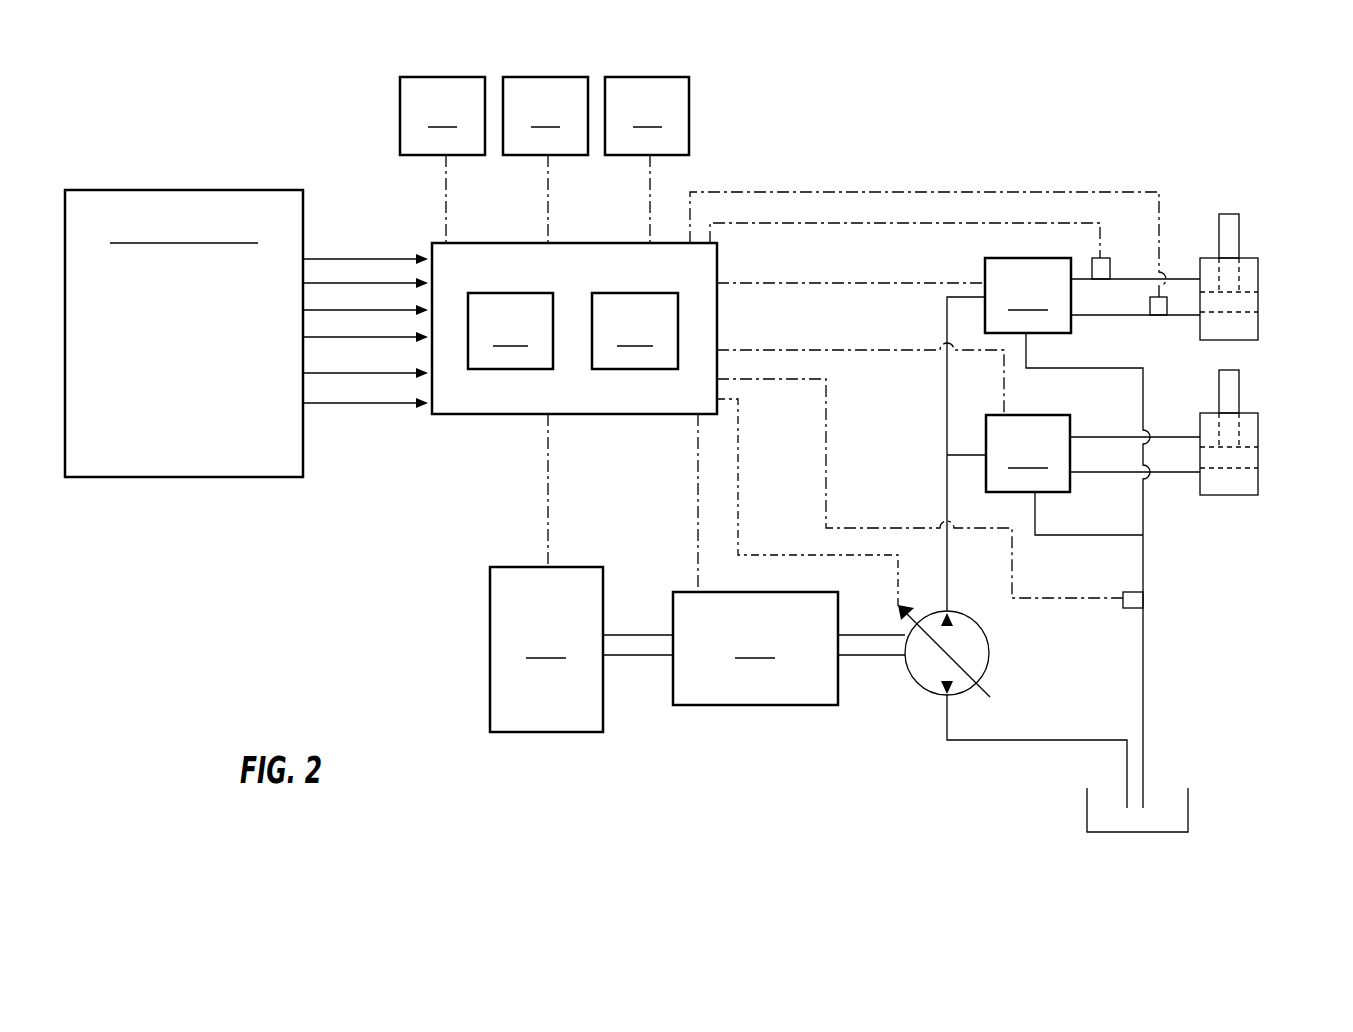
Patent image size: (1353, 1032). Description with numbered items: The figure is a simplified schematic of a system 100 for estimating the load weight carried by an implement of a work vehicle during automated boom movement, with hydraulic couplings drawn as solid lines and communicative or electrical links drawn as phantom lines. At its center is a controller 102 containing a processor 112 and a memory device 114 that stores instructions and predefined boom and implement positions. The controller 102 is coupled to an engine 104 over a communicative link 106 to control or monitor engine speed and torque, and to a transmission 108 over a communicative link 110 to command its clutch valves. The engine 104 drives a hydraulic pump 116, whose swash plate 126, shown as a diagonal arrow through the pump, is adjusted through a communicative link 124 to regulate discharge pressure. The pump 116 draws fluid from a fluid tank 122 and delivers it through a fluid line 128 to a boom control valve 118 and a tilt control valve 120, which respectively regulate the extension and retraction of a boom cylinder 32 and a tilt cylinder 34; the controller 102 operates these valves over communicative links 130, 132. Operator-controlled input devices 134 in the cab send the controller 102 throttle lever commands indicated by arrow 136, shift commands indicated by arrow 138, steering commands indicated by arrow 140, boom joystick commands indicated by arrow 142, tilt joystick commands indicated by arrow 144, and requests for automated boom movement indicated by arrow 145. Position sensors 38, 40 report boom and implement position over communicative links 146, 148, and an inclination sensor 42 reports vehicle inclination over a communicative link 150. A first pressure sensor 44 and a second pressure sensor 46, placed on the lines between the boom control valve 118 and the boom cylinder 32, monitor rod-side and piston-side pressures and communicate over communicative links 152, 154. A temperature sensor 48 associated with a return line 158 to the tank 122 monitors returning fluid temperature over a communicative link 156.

The system 100 is at (1252, 97).
The controller 102 is at (493, 422).
The engine 104 is at (789, 648).
The communicative link 106 is at (698, 510).
The transmission 108 is at (581, 649).
The communicative link 110 is at (548, 530).
The processor 112 is at (510, 331).
The memory device 114 is at (635, 331).
The hydraulic pump 116 is at (918, 690).
The boom control valve 118 is at (1092, 295).
The tilt control valve 120 is at (1093, 475).
The fluid tank 122 is at (1150, 833).
The communicative link 124 is at (805, 555).
The swash plate 126 is at (962, 663).
The fluid line 128 is at (947, 472).
The communicative link 130 is at (912, 283).
The communicative link 132 is at (737, 350).
The operator-controlled input device 134 is at (147, 190).
The arrow 136 is at (320, 257).
The arrow 138 is at (340, 282).
The arrow 140 is at (375, 308).
The arrow 142 is at (375, 340).
The arrow 144 is at (363, 374).
The arrow 145 is at (332, 404).
The communicative link 146 is at (446, 220).
The communicative link 148 is at (548, 220).
The communicative link 150 is at (650, 220).
The communicative link 152 is at (843, 223).
The communicative link 154 is at (895, 192).
The communicative link 156 is at (897, 528).
The return line 158 is at (1150, 668).
The boom cylinder 32 is at (1258, 300).
The tilt cylinder 34 is at (1258, 458).
The position sensor 38 is at (442, 116).
The position sensor 40 is at (545, 116).
The inclination sensor 42 is at (647, 116).
The first pressure sensor 44 is at (1110, 270).
The second pressure sensor 46 is at (1150, 308).
The temperature sensor 48 is at (1123, 598).